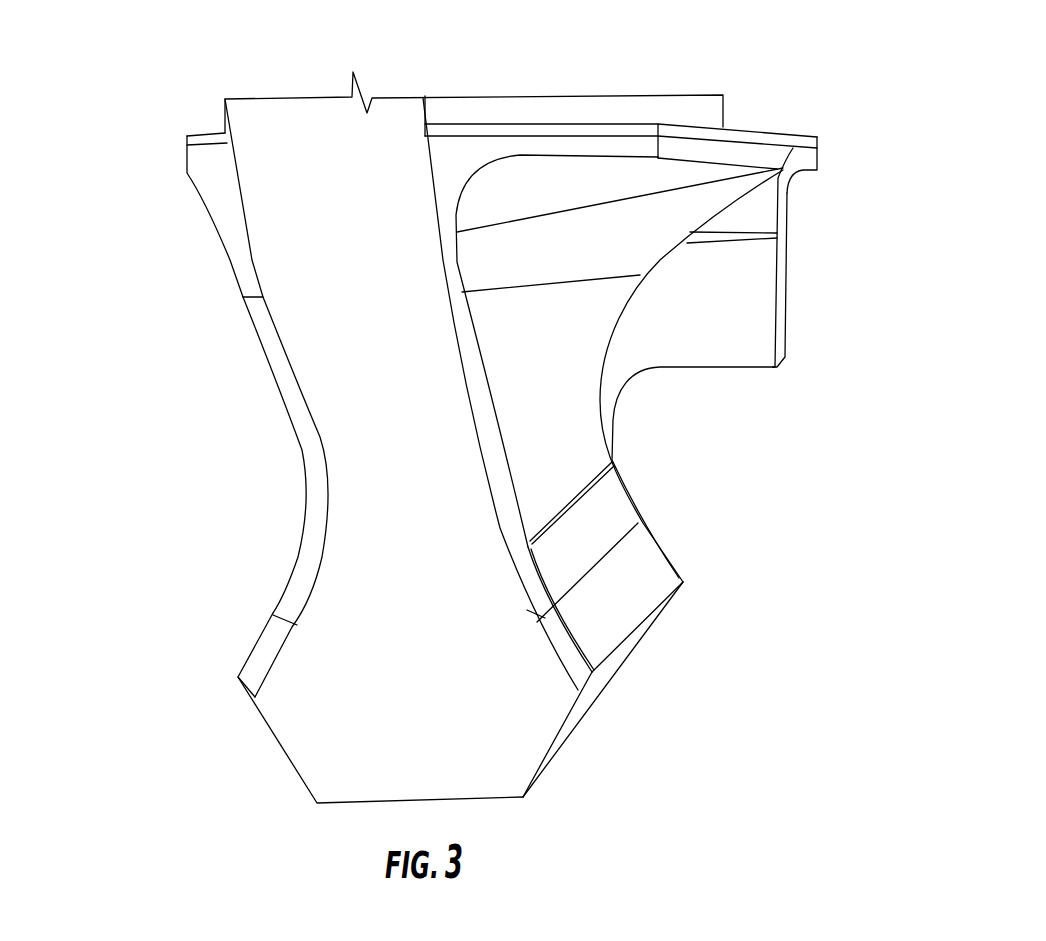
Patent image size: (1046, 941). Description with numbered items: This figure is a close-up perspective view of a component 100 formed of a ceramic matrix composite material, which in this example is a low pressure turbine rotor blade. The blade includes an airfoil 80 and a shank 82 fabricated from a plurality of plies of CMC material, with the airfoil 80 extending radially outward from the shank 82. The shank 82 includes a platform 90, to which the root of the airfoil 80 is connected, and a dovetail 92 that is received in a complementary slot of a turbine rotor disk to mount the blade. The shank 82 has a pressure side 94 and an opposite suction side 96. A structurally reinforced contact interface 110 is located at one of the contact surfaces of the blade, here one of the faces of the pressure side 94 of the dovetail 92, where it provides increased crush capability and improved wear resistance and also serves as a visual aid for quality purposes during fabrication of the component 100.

The airfoil 80 is at (591, 90).
The shank 82 is at (138, 280).
The platform 90 is at (748, 152).
The dovetail 92 is at (332, 705).
The pressure side 94 is at (597, 688).
The suction side 96 is at (302, 545).
The component 100 is at (917, 181).
The structurally reinforced contact interface 110 is at (635, 570).